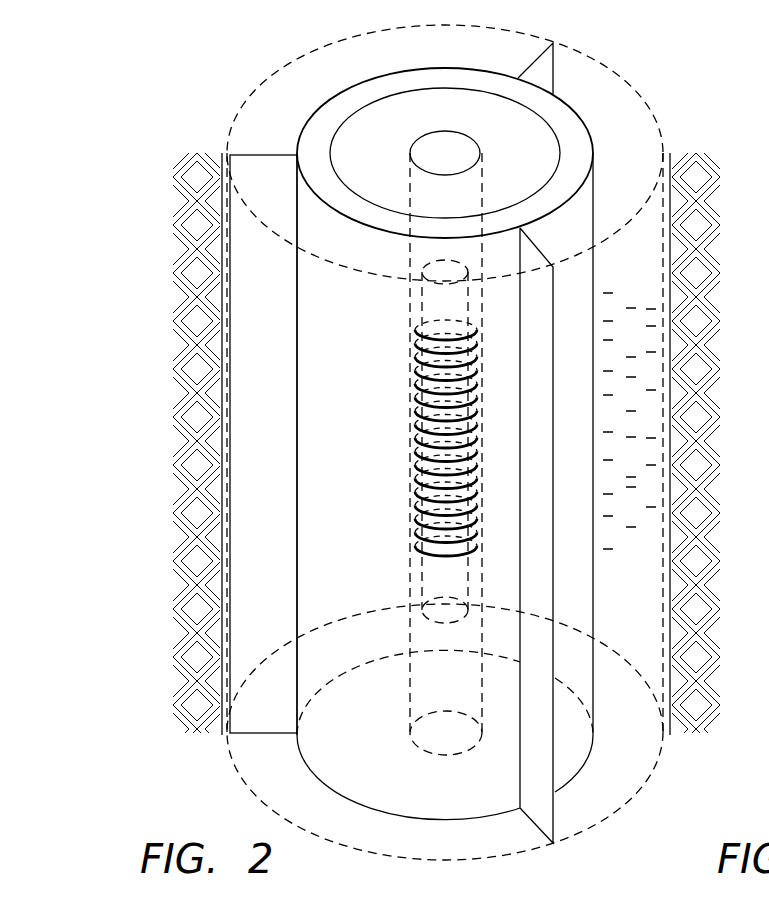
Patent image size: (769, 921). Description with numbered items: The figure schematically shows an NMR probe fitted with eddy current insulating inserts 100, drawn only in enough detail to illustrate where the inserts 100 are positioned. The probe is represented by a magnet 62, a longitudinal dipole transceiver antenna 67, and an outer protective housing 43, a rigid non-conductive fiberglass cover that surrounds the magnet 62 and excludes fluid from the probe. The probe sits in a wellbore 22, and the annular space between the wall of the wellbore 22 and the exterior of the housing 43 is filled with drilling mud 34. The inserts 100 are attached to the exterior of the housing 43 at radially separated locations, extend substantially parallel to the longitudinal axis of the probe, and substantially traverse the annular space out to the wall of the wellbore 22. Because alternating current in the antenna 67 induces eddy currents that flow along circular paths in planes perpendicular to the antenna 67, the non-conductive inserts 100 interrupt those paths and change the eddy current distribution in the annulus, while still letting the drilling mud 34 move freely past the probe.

The wellbore 22 is at (228, 718).
The drilling mud 34 is at (645, 420).
The outer protective housing 43 is at (360, 85).
The magnet 62 is at (412, 100).
The transceiver antenna 67 is at (415, 392).
The eddy current insulating inserts 100 is at (258, 153).